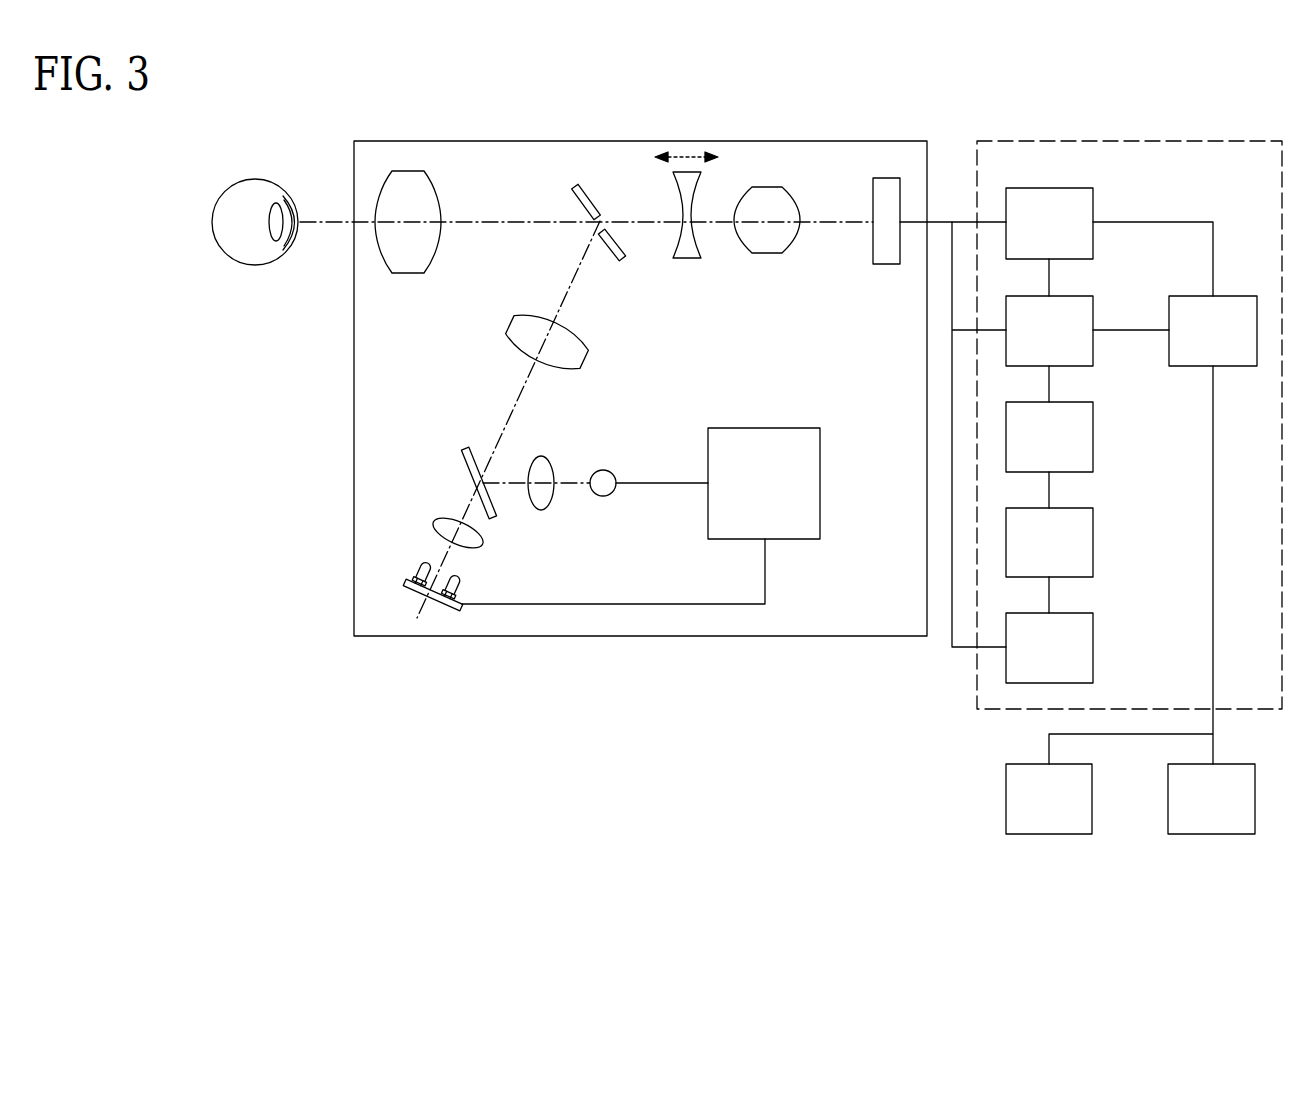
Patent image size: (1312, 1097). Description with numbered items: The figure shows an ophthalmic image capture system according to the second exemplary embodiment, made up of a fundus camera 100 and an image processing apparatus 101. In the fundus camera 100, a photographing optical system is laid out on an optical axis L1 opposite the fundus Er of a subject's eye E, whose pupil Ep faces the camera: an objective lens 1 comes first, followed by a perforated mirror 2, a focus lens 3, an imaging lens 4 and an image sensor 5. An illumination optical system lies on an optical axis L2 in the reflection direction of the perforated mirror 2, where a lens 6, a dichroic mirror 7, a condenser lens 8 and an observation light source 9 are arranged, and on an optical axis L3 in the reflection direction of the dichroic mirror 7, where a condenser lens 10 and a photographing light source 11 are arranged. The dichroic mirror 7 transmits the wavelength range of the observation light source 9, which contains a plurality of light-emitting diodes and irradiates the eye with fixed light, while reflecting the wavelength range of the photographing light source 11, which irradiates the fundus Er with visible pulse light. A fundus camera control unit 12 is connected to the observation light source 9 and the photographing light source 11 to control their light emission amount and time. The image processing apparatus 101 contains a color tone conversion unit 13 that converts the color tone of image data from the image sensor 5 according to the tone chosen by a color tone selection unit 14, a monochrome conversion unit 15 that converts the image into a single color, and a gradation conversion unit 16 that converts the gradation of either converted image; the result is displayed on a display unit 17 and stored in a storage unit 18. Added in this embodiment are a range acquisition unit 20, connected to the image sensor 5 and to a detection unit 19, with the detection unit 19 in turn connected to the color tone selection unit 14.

The subject's eye E is at (252, 180).
The pupil Ep is at (288, 203).
The fundus Er is at (253, 265).
The optical axis L1 is at (495, 226).
The optical axis L2 is at (578, 272).
The optical axis L3 is at (562, 474).
The fundus camera 100 is at (746, 141).
The image processing apparatus 101 is at (1151, 141).
The objective lens 1 is at (408, 274).
The perforated mirror 2 is at (597, 193).
The focus lens 3 is at (688, 260).
The imaging lens 4 is at (767, 255).
The image sensor 5 is at (887, 266).
The lens 6 is at (508, 354).
The dichroic mirror 7 is at (462, 452).
The condenser lens 8 is at (449, 514).
The observation light source 9 is at (422, 562).
The condenser lens 10 is at (542, 511).
The photographing light source 11 is at (613, 470).
The fundus camera control unit 12 is at (763, 428).
The color tone conversion unit 13 is at (1094, 305).
The color tone selection unit 14 is at (1094, 430).
The monochrome conversion unit 15 is at (1094, 200).
The gradation conversion unit 16 is at (1236, 296).
The display unit 17 is at (1005, 796).
The storage unit 18 is at (1257, 796).
The detection unit 19 is at (1094, 538).
The range acquisition unit 20 is at (1094, 646).